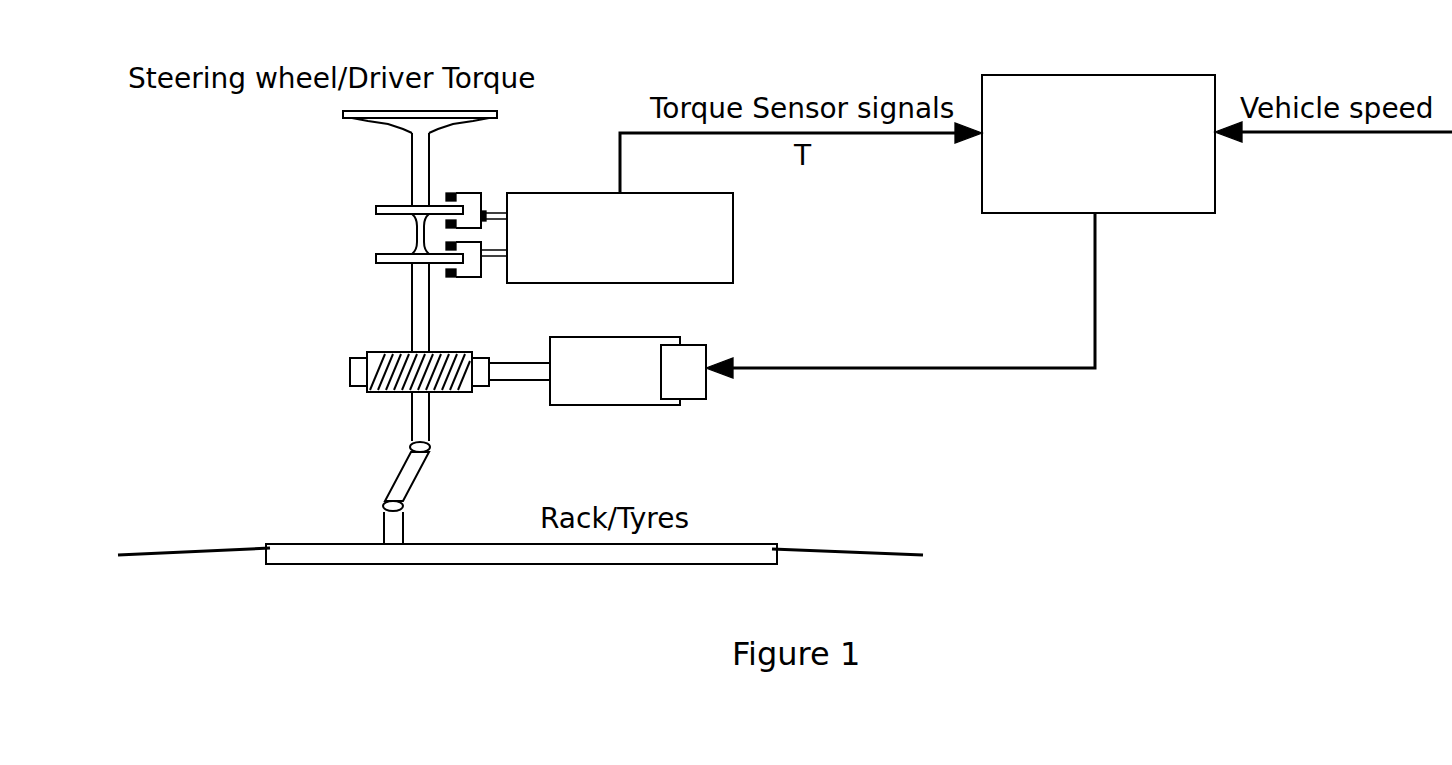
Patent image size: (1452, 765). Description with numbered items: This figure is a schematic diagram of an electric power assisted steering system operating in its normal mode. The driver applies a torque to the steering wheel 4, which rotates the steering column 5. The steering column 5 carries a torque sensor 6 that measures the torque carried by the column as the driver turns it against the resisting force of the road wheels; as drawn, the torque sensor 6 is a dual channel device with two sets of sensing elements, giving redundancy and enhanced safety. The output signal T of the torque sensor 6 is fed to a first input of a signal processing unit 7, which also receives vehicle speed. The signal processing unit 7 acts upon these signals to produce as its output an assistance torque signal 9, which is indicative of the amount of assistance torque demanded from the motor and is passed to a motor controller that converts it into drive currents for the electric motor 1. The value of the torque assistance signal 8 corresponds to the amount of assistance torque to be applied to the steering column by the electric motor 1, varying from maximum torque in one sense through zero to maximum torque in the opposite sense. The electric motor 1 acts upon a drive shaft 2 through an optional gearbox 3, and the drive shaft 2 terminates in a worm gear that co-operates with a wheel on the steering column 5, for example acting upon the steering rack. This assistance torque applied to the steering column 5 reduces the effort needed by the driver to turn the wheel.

The electric motor 1 is at (665, 406).
The drive shaft 2 is at (512, 380).
The gearbox 3 is at (373, 388).
The steering wheel 4 is at (360, 120).
The steering column 5 is at (410, 316).
The torque sensor 6 is at (535, 193).
The signal processing unit 7 is at (1098, 144).
The torque assistance signal 8 is at (706, 387).
The assistance torque signal 9 is at (1022, 368).